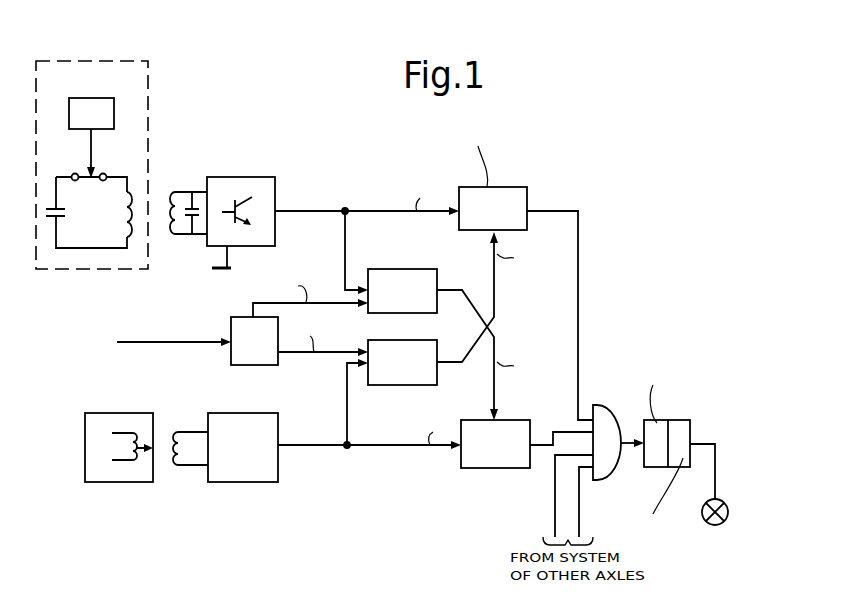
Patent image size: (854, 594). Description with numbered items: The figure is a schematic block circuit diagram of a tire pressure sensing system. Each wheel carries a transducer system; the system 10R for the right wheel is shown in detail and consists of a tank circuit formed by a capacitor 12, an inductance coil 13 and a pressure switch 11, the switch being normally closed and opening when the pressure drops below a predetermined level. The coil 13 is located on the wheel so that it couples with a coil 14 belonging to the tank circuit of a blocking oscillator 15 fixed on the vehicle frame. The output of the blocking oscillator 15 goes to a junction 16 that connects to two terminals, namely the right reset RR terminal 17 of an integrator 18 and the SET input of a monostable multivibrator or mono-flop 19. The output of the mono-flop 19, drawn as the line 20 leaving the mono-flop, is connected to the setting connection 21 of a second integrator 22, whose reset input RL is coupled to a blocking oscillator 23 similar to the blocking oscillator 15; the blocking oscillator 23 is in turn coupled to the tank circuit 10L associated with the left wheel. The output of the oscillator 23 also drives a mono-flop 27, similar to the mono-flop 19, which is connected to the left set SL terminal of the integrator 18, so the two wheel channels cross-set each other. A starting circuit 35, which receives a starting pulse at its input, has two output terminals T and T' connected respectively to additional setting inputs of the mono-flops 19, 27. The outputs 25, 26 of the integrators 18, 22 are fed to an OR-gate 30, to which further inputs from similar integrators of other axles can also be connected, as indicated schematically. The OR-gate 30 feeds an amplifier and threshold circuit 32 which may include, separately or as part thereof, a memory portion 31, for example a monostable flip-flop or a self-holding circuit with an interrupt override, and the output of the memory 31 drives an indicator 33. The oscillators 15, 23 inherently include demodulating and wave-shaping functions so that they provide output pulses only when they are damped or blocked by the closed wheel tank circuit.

The system for the right wheel 10R is at (119, 152).
The pressure switch 11 is at (90, 182).
The capacitor 12 is at (60, 214).
The inductance coil 13 is at (126, 211).
The coil 14 is at (166, 228).
The blocking oscillator 15 is at (222, 177).
The junction 16 is at (345, 211).
The right reset RR terminal 17 is at (459, 219).
The integrator 18 is at (488, 178).
The monostable multivibrator (mono-flop) 19 is at (368, 313).
The first monoflop output line 20 is at (440, 287).
The setting connection 21 is at (498, 420).
The integrator 22 is at (500, 468).
The blocking oscillator 23 is at (243, 476).
The output of integrator 18 25 is at (527, 205).
The output of integrator 22 26 is at (539, 455).
The monostable multivibrator (mono-flop) 27 is at (403, 385).
The OR-gate 30 is at (598, 406).
The memory portion 31 is at (690, 437).
The amplifier and threshold circuit 32 is at (652, 468).
The indicator 33 is at (704, 519).
The starting circuit 35 is at (243, 352).
The tank circuit for the left wheel 10L is at (108, 472).